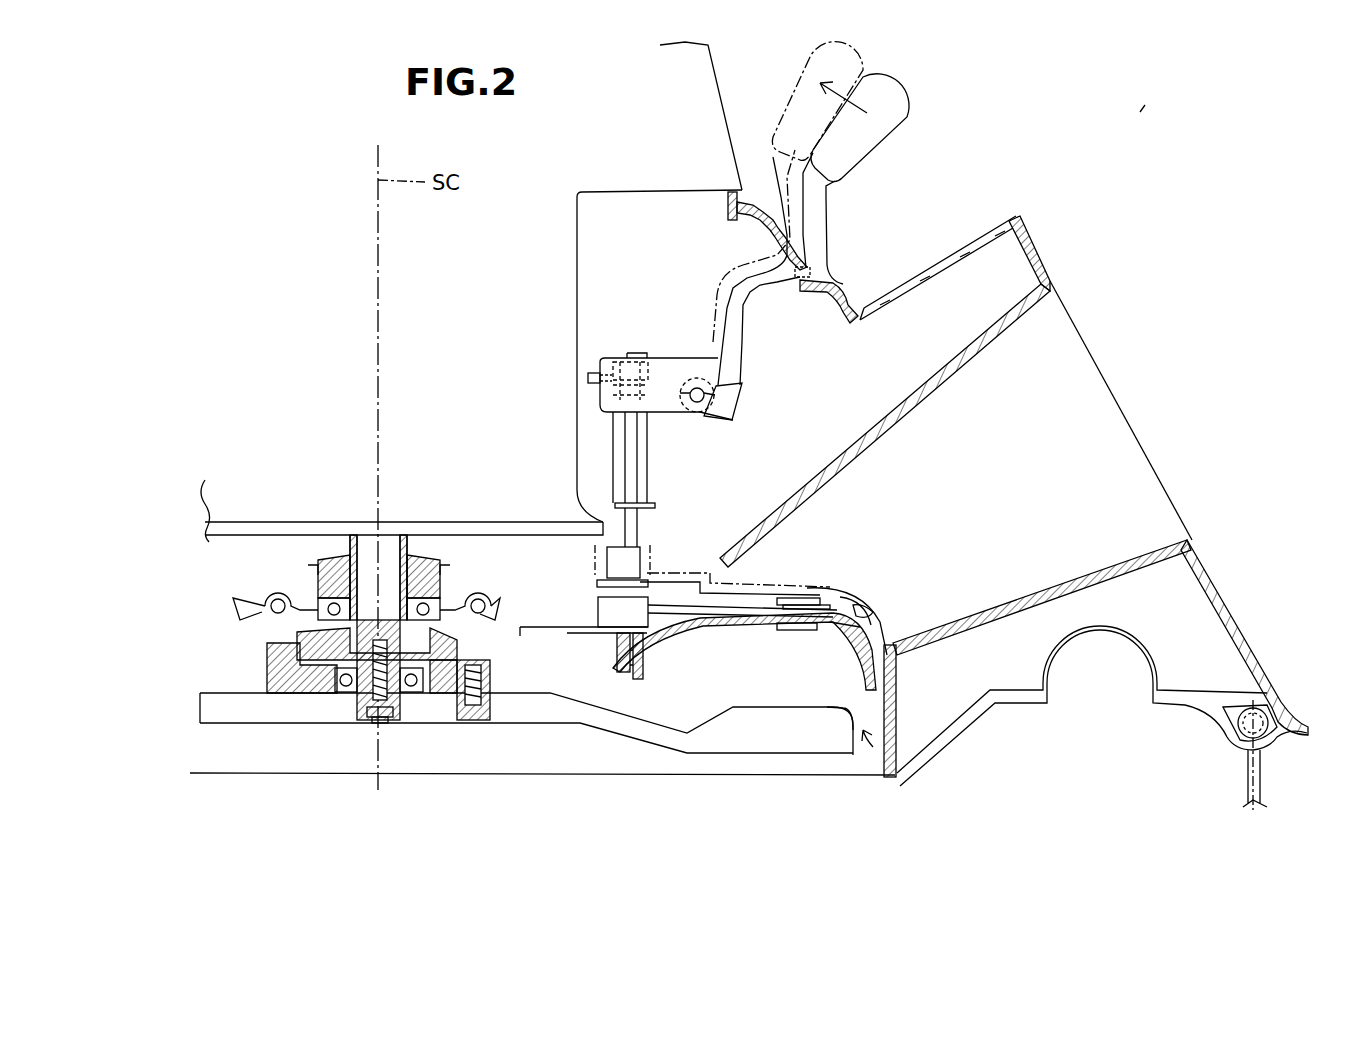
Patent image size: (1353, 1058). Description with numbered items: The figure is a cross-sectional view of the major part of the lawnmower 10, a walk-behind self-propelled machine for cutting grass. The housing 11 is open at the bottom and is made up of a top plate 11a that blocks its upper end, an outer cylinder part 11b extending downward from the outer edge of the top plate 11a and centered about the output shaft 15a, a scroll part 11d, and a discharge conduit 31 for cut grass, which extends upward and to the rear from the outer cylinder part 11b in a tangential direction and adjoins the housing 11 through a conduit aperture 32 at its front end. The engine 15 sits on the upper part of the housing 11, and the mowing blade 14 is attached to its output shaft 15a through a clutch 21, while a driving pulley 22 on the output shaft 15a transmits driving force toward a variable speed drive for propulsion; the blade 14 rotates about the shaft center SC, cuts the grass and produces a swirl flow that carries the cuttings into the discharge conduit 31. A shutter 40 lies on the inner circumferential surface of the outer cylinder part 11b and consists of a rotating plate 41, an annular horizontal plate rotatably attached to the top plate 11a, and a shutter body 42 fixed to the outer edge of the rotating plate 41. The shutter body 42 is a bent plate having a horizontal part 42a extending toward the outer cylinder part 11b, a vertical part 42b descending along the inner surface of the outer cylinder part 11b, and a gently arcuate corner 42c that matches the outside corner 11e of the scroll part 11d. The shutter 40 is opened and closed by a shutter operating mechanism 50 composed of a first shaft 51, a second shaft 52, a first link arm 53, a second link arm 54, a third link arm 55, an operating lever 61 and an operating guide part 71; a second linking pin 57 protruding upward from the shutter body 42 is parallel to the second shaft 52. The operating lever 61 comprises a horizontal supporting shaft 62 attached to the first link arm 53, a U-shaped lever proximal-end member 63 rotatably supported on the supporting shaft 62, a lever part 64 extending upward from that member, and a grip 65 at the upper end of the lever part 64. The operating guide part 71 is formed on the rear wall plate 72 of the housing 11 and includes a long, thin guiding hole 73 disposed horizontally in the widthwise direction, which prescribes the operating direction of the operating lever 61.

The lawnmower 10 is at (1152, 104).
The housing 11 is at (1014, 506).
The top plate 11a is at (763, 580).
The outer cylinder part 11b is at (893, 725).
The scroll part 11d is at (883, 777).
The outside corner 11e is at (860, 610).
The mowing blade 14 is at (600, 718).
The engine 15 is at (730, 69).
The output shaft 15a is at (370, 535).
The clutch 21 is at (285, 600).
The driving pulley 22 is at (330, 585).
The discharge conduit for cut grass 31 is at (1067, 335).
The conduit aperture 32 is at (905, 640).
The shutter 40 is at (690, 660).
The rotating plate 41 is at (638, 680).
The shutter body 42 is at (745, 749).
The horizontal part 42a is at (760, 625).
The vertical part 42b is at (850, 772).
The corner 42c is at (833, 625).
The shutter operating mechanism 50 is at (692, 372).
The first shaft 51 is at (627, 487).
The second shaft 52 is at (617, 455).
The first link arm 53 is at (610, 405).
The second link arm 54 is at (590, 378).
The third link arm 55 is at (683, 600).
The second linking pin 57 is at (810, 587).
The operating lever 61 is at (854, 192).
The supporting shaft 62 is at (705, 408).
The lever proximal-end member 63 is at (740, 400).
The lever part 64 is at (740, 355).
The grip 65 is at (912, 113).
The operating guide part 71 is at (855, 274).
The rear wall plate 72 is at (845, 262).
The guiding hole 73 is at (775, 241).